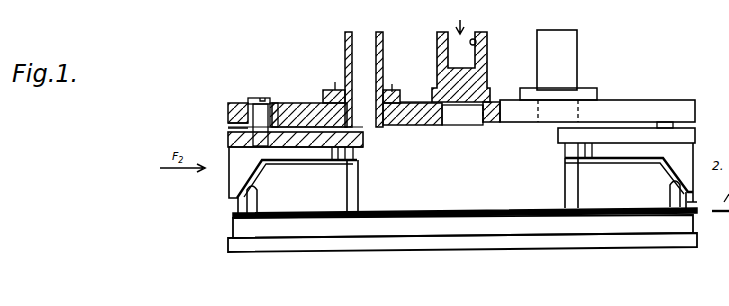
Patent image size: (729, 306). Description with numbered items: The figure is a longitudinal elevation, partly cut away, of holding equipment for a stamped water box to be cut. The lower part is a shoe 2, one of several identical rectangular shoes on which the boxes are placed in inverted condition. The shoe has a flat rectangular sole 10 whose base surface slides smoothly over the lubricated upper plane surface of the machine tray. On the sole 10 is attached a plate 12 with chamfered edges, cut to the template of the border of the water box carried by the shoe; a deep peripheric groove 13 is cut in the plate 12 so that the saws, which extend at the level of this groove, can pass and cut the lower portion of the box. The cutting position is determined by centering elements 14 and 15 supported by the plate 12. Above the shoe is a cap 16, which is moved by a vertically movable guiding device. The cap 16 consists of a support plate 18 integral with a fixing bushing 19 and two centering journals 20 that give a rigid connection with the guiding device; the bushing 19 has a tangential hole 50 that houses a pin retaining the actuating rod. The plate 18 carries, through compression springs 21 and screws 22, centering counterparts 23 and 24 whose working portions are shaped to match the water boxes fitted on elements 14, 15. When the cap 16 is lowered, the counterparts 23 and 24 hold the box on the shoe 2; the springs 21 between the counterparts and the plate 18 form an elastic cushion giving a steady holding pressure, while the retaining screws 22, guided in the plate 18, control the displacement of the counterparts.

The shoe 2 is at (451, 256).
The sole 10 is at (406, 240).
The plate 12 is at (641, 228).
The peripheric groove 13 is at (238, 217).
The centering element 14 is at (355, 186).
The centering element 15 is at (578, 171).
The cap 16 is at (299, 93).
The support plate 18 is at (277, 103).
The fixing bushing 19 is at (476, 87).
The centering journal 20 is at (384, 73).
The compression spring 21 is at (228, 130).
The screw 22 is at (238, 103).
The centering counterpart 23 is at (230, 182).
The centering counterpart 24 is at (690, 158).
The tangential hole 50 is at (477, 42).